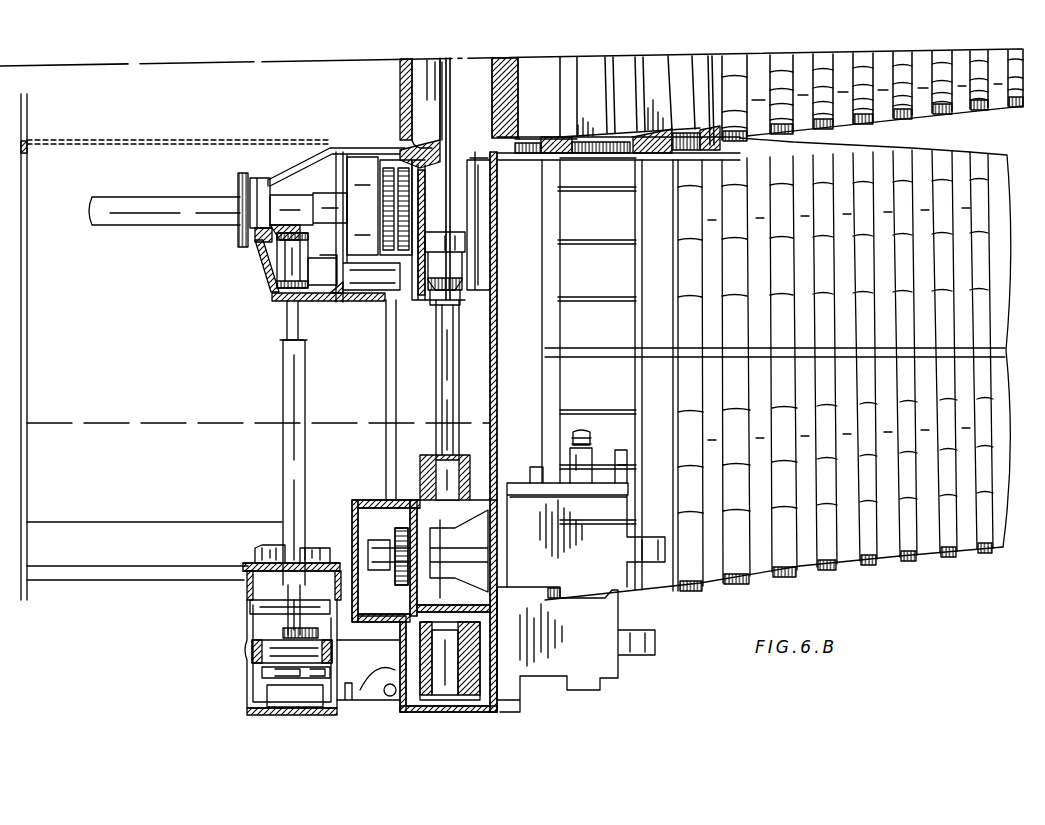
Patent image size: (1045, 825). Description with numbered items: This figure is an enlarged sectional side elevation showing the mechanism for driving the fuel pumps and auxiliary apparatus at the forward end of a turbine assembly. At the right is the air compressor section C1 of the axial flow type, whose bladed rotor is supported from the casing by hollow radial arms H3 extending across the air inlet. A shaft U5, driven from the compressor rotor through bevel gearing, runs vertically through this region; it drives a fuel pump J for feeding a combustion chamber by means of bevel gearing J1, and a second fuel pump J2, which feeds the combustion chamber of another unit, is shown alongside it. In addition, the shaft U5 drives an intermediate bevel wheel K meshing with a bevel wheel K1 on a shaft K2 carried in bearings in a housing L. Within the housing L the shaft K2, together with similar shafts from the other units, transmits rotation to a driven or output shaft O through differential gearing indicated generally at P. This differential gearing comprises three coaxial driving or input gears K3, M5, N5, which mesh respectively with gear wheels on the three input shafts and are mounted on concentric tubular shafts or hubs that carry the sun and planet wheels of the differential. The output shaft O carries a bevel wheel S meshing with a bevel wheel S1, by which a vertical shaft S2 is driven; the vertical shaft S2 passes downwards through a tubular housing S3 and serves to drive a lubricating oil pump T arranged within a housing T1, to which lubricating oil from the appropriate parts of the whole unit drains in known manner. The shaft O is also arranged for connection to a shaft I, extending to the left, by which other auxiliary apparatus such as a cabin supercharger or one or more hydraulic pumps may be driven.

The shaft I is at (178, 207).
The driven or output shaft O is at (300, 205).
The housing L is at (302, 163).
The differential gearing P is at (367, 165).
The driving or input gear N5 is at (383, 168).
The driving or input gear M5 is at (402, 165).
The driving or input gear K3 is at (430, 152).
The shaft U5 is at (440, 80).
The hollow radial arms H3 is at (504, 80).
The bevel wheel S is at (300, 207).
The bevel wheel S1 is at (263, 230).
The vertical shaft S2 is at (292, 313).
The tubular housing S3 is at (292, 463).
The intermediate bevel wheel K is at (442, 293).
The bevel wheel K1 is at (403, 297).
The shaft K2 is at (377, 272).
The fuel pump J is at (545, 517).
The bevel gearing J1 is at (433, 502).
The fuel pump J2 is at (602, 653).
The lubricating oil pump T is at (257, 631).
The housing T1 is at (256, 660).
The air compressor section C1 is at (893, 542).